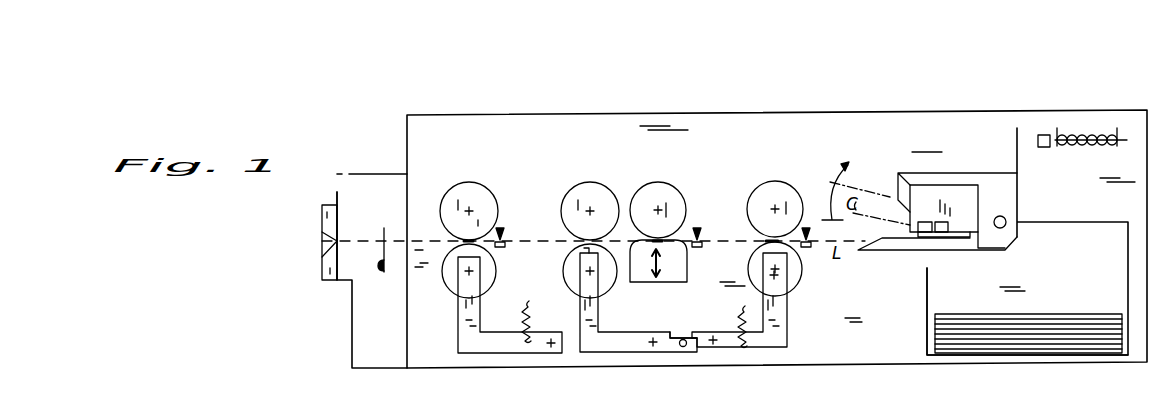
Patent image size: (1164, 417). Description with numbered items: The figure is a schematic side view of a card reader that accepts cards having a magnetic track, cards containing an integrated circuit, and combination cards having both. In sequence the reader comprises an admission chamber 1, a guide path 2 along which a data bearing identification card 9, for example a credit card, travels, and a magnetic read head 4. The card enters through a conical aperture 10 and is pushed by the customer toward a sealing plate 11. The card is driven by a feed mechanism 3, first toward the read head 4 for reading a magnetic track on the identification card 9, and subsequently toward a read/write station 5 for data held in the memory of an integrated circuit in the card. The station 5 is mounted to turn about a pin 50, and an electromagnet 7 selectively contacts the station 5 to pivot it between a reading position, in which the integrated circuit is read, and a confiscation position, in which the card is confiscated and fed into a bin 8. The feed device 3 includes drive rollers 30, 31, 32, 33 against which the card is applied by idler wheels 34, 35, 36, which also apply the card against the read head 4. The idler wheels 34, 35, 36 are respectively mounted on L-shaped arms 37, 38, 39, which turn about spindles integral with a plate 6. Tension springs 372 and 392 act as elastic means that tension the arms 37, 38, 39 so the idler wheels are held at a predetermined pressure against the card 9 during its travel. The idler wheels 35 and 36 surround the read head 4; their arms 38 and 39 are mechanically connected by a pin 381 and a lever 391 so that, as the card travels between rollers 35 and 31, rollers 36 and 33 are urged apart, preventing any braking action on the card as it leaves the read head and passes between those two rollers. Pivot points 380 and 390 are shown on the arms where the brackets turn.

The admission chamber 1 is at (373, 178).
The guide path 2 is at (437, 246).
The feed mechanism 3 is at (467, 152).
The magnetic read head 4 is at (670, 276).
The read/write station 5 is at (963, 160).
The plate 6 is at (825, 122).
The electromagnet 7 is at (1101, 128).
The bin 8 is at (998, 356).
The identification card 9 is at (1040, 314).
The conical aperture 10 is at (322, 238).
The sealing plate 11 is at (383, 262).
The drive roller 30 is at (484, 195).
The drive roller 31 is at (597, 190).
The drive roller 32 is at (668, 192).
The drive roller 33 is at (768, 188).
The idler wheel 34 is at (494, 272).
The idler wheel 35 is at (580, 282).
The idler wheel 36 is at (798, 272).
The L-shaped arm 37 is at (482, 345).
The L-shaped arm 38 is at (605, 346).
The L-shaped arm 39 is at (785, 325).
The pin 50 is at (1006, 219).
The tension spring 372 is at (528, 330).
The pivot 380 is at (654, 346).
The pin 381 is at (684, 348).
The pivot 390 is at (716, 345).
The lever 391 is at (686, 338).
The tension spring 392 is at (752, 322).